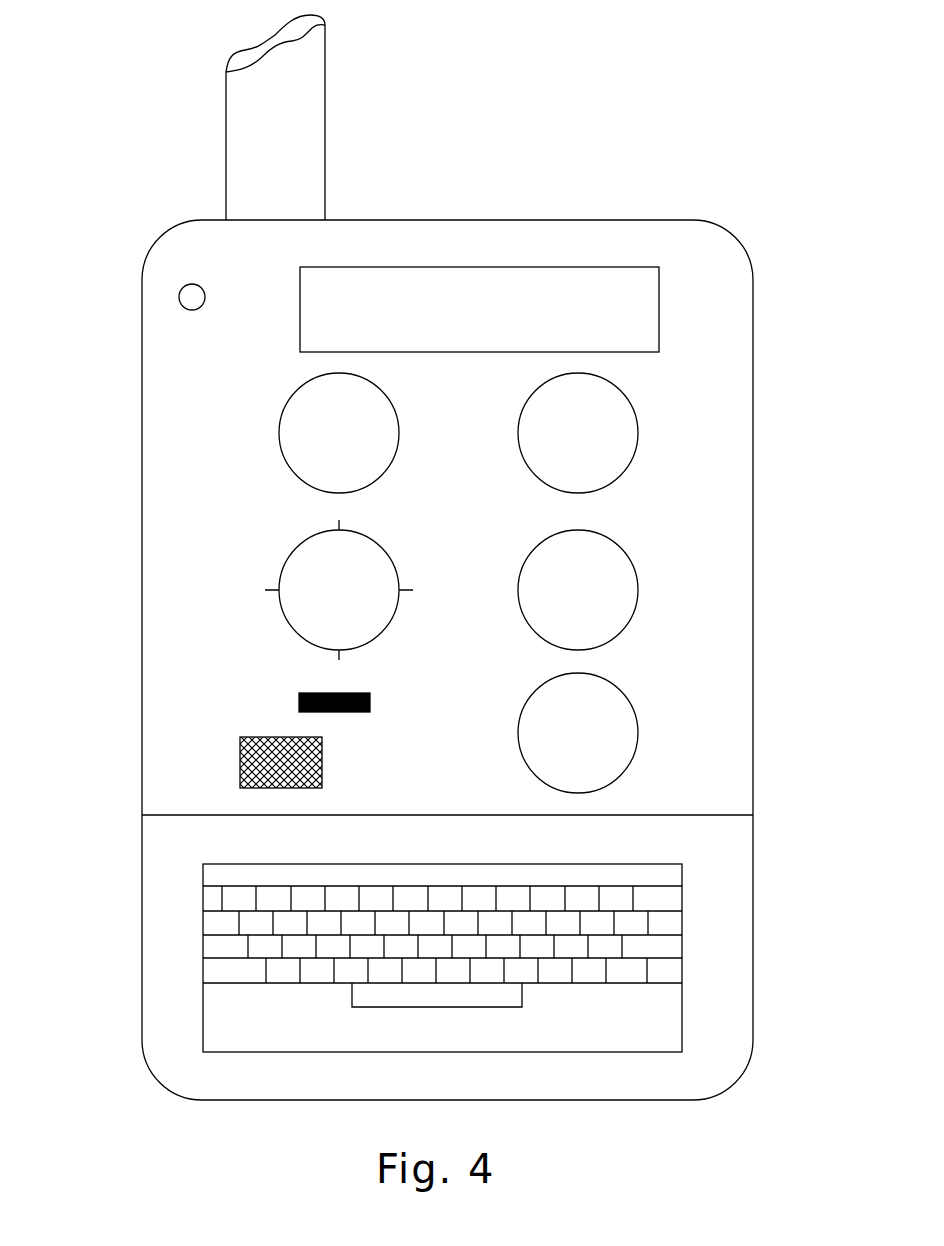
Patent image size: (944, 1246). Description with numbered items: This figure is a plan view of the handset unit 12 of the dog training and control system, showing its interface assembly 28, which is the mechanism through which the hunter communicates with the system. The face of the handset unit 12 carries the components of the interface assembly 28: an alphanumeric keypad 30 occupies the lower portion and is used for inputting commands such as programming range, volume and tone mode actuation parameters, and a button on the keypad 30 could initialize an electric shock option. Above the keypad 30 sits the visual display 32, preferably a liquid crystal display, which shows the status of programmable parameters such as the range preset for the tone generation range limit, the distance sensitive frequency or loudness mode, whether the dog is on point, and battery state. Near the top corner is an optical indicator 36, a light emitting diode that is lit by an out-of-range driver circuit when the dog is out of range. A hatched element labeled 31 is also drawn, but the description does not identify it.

The handset unit 12 is at (125, 497).
The interface assembly 28 is at (780, 267).
The keypad 30 is at (720, 1037).
The speaker 31 is at (238, 753).
The visual display 32 is at (659, 305).
The optical indicator 36 is at (205, 288).